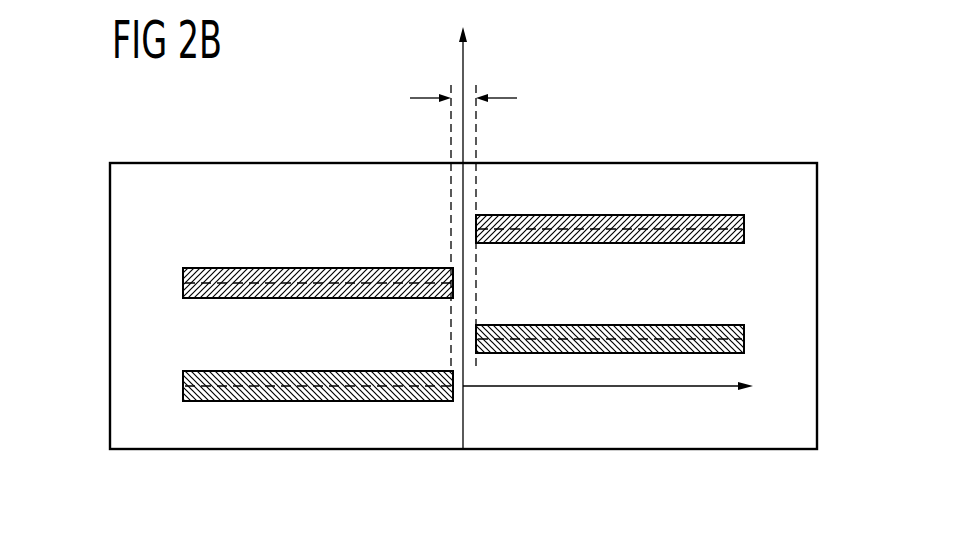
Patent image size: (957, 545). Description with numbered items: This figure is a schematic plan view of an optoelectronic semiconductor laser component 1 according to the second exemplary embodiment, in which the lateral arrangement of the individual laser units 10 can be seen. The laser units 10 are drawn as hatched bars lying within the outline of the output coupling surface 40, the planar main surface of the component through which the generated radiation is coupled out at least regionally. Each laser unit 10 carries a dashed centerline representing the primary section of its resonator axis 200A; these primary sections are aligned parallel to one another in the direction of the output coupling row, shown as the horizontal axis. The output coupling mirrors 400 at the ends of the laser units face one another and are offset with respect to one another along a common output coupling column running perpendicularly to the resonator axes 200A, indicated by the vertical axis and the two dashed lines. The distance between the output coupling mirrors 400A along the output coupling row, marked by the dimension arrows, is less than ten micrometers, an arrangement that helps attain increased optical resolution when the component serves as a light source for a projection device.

The optoelectronic semiconductor laser component 1 is at (662, 90).
The laser unit 10 is at (255, 298).
The output coupling surface 40 is at (671, 418).
The primary section of the resonator axis 200A is at (362, 298).
The output coupling mirror 400 is at (457, 267).
The distance between the output coupling mirrors 400A is at (474, 96).